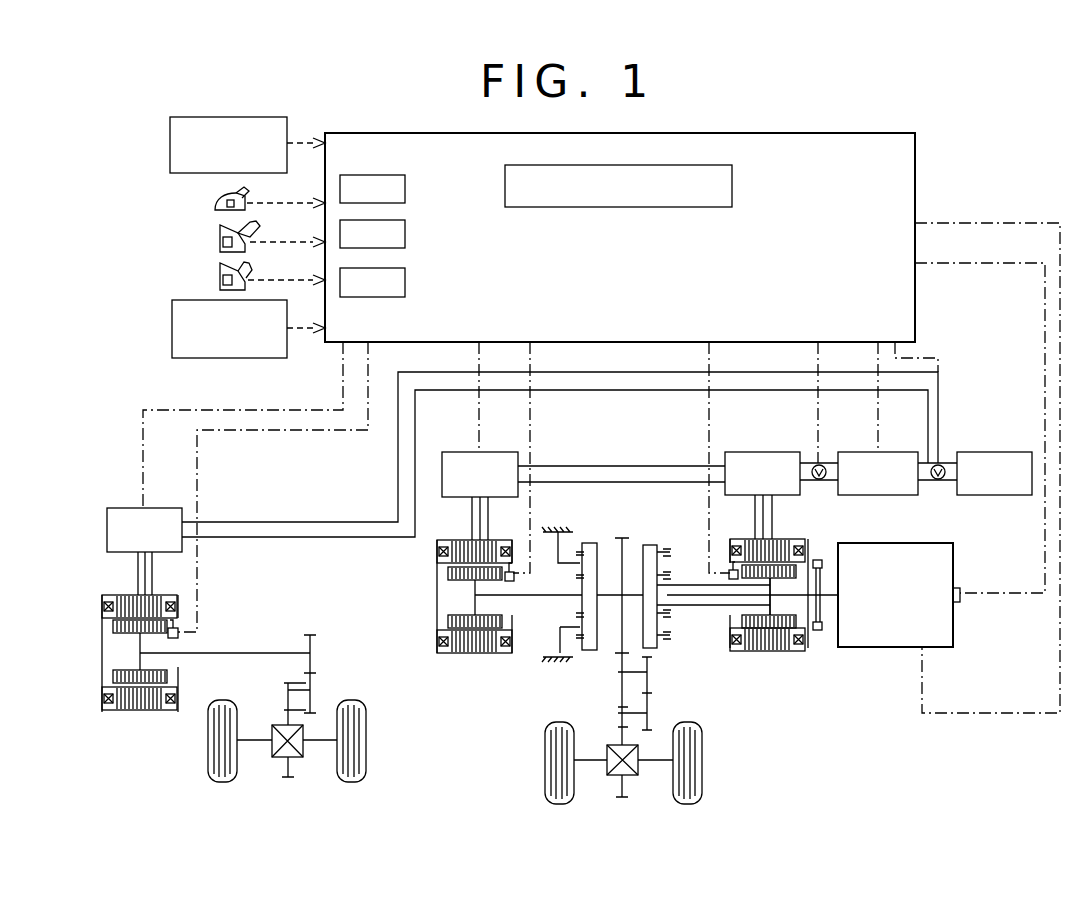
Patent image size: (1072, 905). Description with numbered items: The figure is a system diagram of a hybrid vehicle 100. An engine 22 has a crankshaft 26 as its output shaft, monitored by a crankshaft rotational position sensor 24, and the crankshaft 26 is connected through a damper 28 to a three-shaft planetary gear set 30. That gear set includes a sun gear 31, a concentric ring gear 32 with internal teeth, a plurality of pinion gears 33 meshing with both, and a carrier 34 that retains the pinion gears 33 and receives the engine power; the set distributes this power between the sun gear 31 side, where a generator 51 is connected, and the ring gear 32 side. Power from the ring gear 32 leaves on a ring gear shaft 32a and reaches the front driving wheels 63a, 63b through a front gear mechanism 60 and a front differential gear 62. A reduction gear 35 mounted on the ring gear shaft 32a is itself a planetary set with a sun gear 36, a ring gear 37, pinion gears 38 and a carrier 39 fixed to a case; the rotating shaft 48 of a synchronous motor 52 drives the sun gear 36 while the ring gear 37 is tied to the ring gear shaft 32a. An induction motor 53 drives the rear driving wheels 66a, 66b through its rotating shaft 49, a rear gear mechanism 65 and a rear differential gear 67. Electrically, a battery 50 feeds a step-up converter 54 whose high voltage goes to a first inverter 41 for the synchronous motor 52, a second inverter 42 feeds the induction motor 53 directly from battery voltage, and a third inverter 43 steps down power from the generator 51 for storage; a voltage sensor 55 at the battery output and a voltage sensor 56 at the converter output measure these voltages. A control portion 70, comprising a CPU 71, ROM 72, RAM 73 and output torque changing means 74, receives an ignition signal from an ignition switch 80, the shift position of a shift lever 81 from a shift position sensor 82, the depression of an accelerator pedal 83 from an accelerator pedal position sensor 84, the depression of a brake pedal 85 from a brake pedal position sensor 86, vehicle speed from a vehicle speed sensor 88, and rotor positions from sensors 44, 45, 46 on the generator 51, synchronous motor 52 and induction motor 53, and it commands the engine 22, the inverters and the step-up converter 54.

The engine 22 is at (953, 560).
The crankshaft rotational position sensor 24 is at (960, 602).
The crankshaft 26 is at (832, 597).
The damper 28 is at (816, 632).
The planetary gear set 30 is at (656, 563).
The sun gear 31 is at (668, 611).
The ring gear 32 is at (668, 650).
The ring gear shaft 32a is at (612, 592).
The pinion gears 33 is at (668, 636).
The carrier 34 is at (655, 545).
The reduction gear 35 is at (581, 524).
The sun gear 36 is at (578, 608).
The ring gear 37 is at (618, 656).
The pinion gears 38 is at (560, 630).
The carrier 39 is at (578, 565).
The first inverter 41 is at (465, 451).
The second inverter 42 is at (130, 506).
The third inverter 43 is at (760, 451).
The rotor position detecting sensor 44 is at (733, 569).
The rotor position detecting sensor 45 is at (510, 571).
The rotor position detecting sensor 46 is at (173, 627).
The rotating shaft 48 is at (486, 655).
The rotating shaft 49 is at (225, 652).
The battery 50 is at (1000, 451).
The generator 51 is at (780, 650).
The synchronous motor 52 is at (442, 655).
The induction motor 53 is at (118, 712).
The step-up converter 54 is at (885, 451).
The voltage sensor 55 is at (938, 482).
The voltage sensor 56 is at (822, 482).
The front gear mechanism 60 is at (663, 704).
The front differential gear 62 is at (640, 778).
The front driving wheel 63a is at (545, 762).
The front driving wheel 63b is at (703, 762).
The rear gear mechanism 65 is at (318, 644).
The rear driving wheel 66a is at (208, 762).
The rear driving wheel 66b is at (365, 762).
The rear differential gear 67 is at (303, 760).
The control portion 70 is at (915, 177).
The CPU 71 is at (405, 190).
The ROM 72 is at (405, 235).
The RAM 73 is at (405, 283).
The output torque changing means 74 is at (732, 188).
The ignition switch 80 is at (168, 150).
The shift lever 81 is at (236, 192).
The shift position sensor 82 is at (215, 205).
The accelerator pedal 83 is at (240, 232).
The accelerator pedal position sensor 84 is at (220, 246).
The brake pedal 85 is at (238, 270).
The brake pedal position sensor 86 is at (220, 286).
The vehicle speed sensor 88 is at (170, 330).
The hybrid vehicle 100 is at (966, 210).